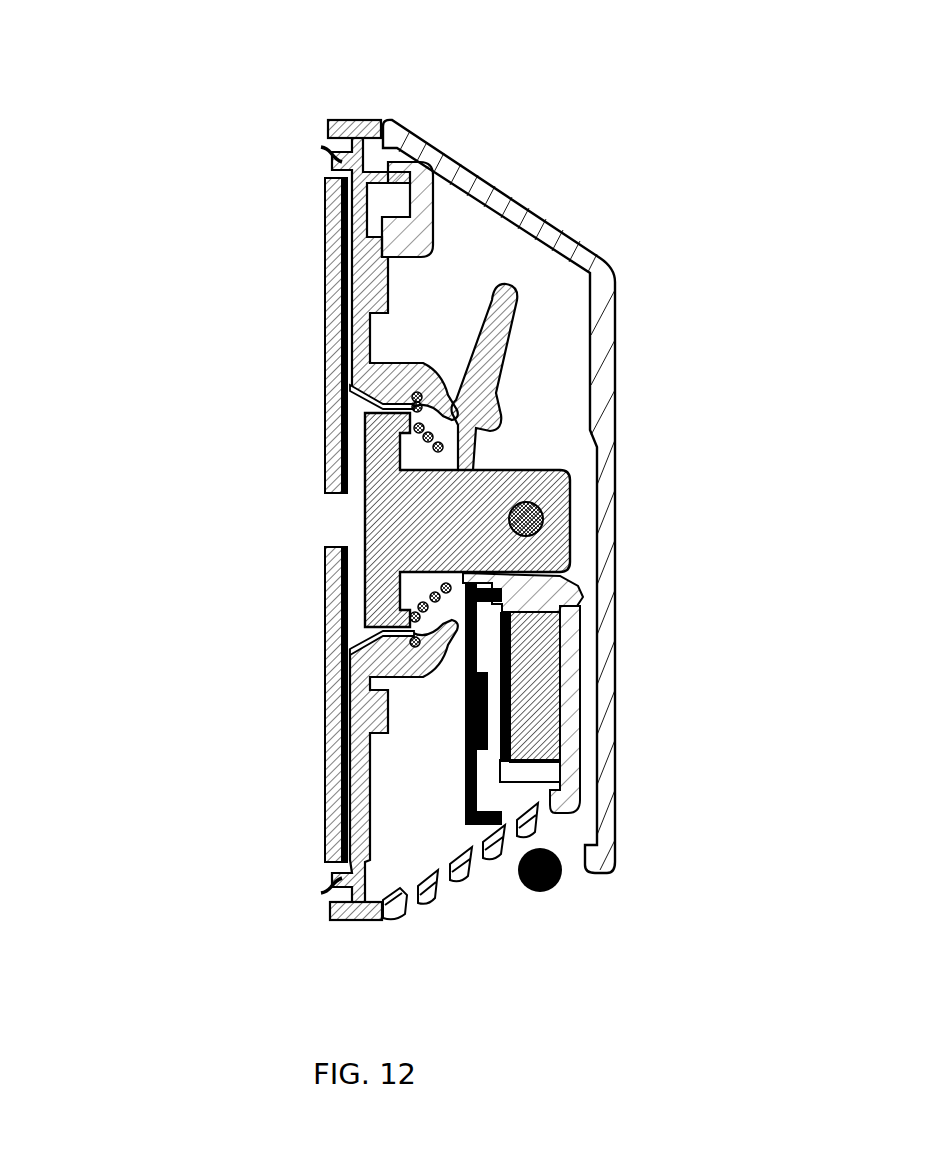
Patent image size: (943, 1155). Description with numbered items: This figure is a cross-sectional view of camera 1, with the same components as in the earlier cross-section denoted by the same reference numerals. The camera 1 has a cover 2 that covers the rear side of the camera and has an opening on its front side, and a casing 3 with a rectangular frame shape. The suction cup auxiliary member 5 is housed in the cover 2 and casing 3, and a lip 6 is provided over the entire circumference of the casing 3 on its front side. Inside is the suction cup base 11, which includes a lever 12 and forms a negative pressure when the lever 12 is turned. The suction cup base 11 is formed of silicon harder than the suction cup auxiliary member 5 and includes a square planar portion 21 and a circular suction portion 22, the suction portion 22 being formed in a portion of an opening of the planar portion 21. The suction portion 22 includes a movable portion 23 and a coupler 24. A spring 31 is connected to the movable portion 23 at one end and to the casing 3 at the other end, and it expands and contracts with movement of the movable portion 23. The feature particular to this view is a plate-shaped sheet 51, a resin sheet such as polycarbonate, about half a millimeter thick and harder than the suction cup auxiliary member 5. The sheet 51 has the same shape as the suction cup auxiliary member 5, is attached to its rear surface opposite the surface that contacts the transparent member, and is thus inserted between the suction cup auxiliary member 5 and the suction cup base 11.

The camera 1 is at (474, 62).
The cover 2 is at (616, 486).
The casing 3 is at (326, 125).
The suction cup auxiliary member 5 is at (324, 268).
The lip 6 is at (320, 147).
The suction cup base 11 is at (540, 436).
The lever 12 is at (500, 338).
The planar portion 21 is at (348, 342).
The suction portion 22 is at (230, 412).
The movable portion 23 is at (364, 513).
The coupler 24 is at (352, 388).
The spring 31 is at (437, 390).
The sheet 51 is at (324, 206).